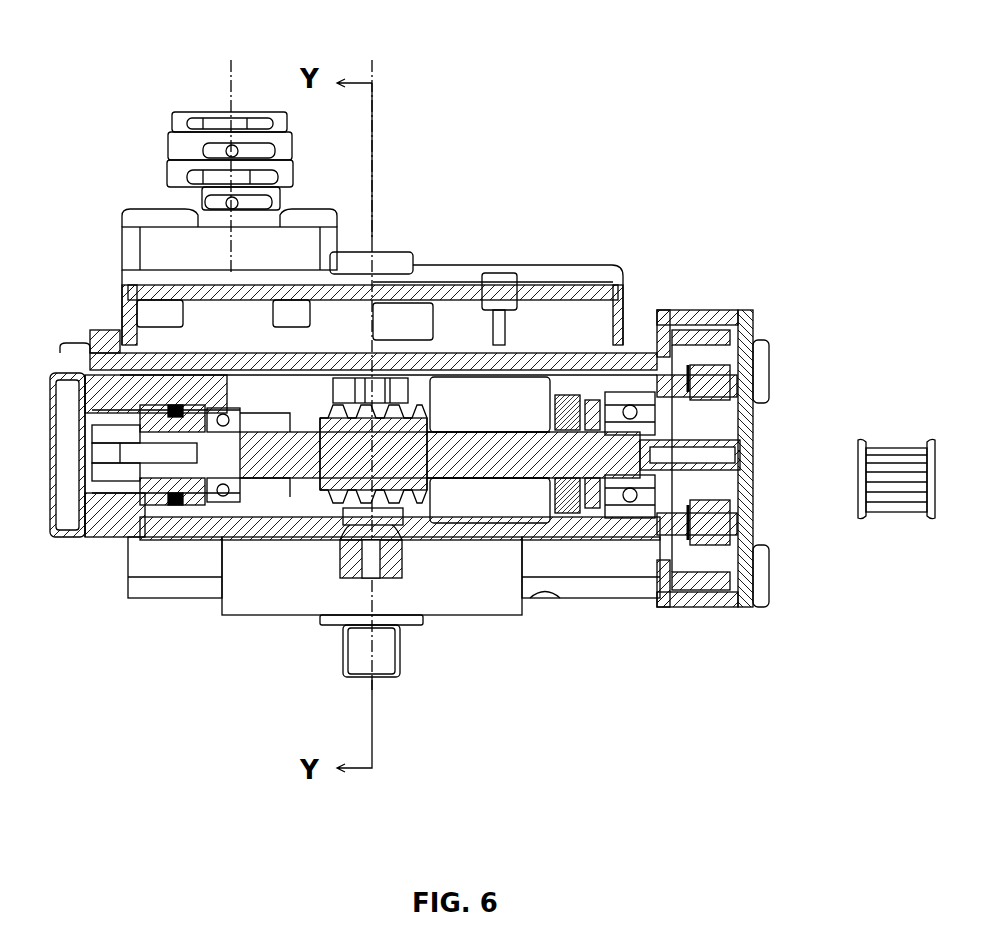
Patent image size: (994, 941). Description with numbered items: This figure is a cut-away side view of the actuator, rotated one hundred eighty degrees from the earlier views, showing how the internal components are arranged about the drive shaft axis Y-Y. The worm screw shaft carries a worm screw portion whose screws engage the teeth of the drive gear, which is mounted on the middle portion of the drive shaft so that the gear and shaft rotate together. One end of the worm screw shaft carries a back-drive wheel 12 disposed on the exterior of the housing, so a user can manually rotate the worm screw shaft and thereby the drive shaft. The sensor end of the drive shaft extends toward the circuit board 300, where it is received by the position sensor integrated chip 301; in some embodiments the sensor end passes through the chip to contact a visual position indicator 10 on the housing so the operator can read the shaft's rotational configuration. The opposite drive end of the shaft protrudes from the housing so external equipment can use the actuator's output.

The visual position indicator 10 is at (395, 238).
The back-drive wheel 12 is at (63, 528).
The circuit board 300 is at (565, 352).
The position sensor integrated chip 301 is at (332, 332).